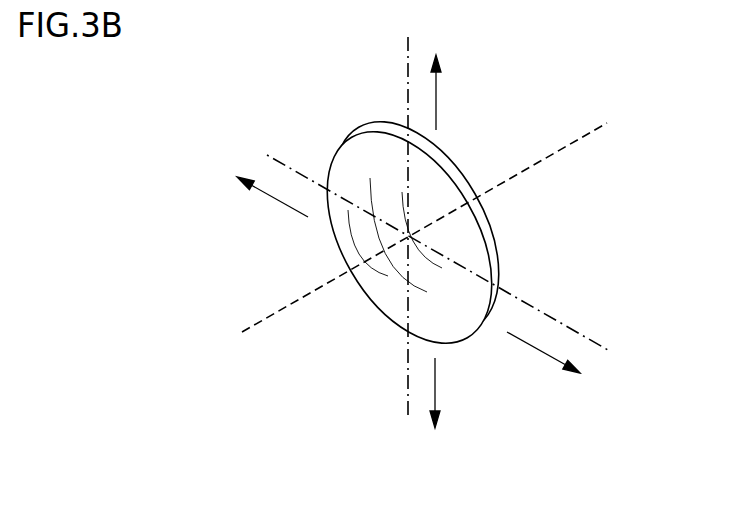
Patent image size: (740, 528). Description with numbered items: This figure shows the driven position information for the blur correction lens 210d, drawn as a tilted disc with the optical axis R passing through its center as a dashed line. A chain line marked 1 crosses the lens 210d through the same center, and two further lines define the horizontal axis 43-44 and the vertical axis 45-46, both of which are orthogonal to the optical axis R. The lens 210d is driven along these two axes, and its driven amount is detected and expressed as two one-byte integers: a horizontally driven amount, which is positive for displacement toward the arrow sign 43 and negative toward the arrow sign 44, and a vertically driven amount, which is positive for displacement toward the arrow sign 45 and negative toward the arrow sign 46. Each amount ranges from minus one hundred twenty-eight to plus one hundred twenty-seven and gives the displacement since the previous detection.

The optical axis 1 is at (260, 149).
The blur correction lens 210d is at (495, 237).
The optical axis R is at (594, 132).
The arrow sign 43 is at (301, 214).
The arrow sign 44 is at (541, 347).
The arrow sign 45 is at (437, 88).
The arrow sign 46 is at (435, 385).